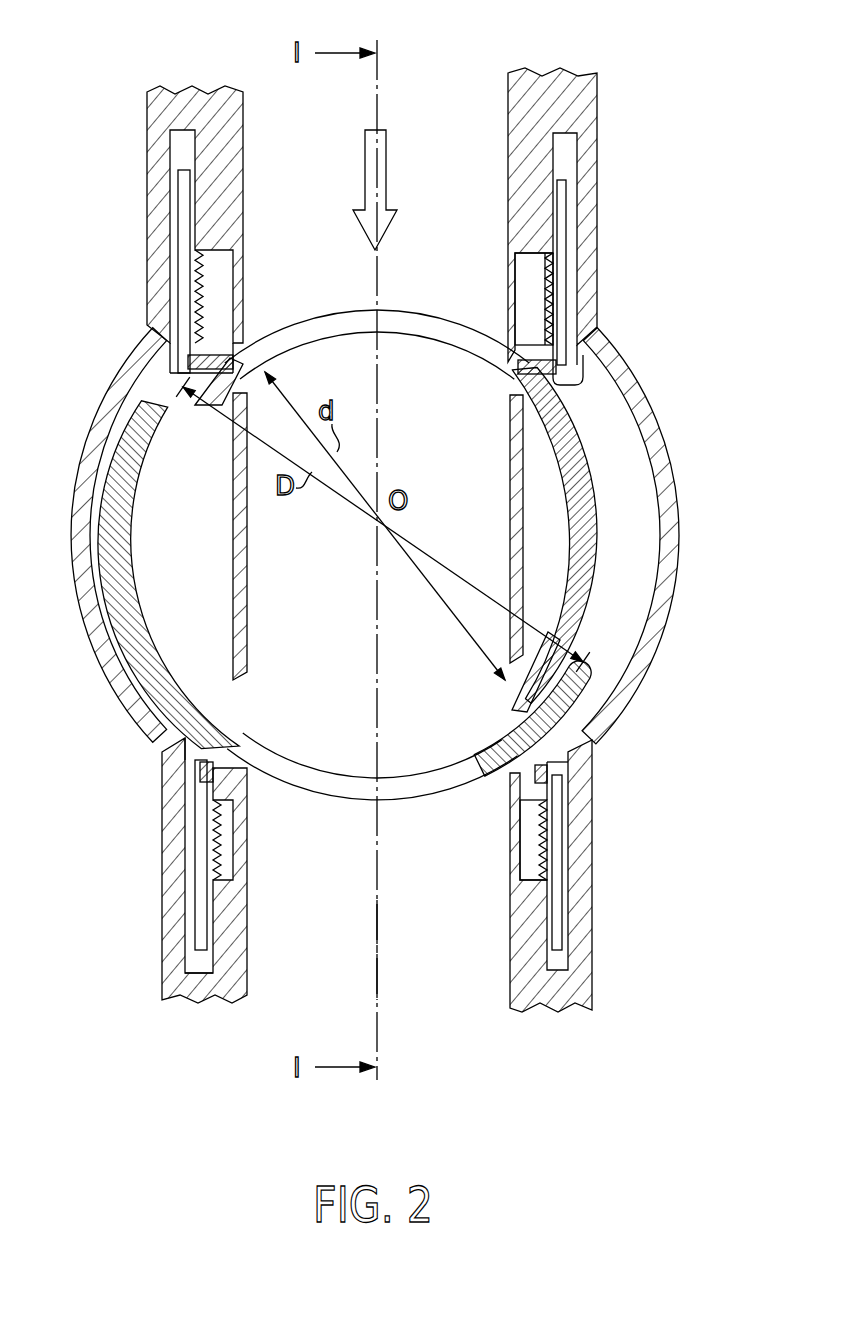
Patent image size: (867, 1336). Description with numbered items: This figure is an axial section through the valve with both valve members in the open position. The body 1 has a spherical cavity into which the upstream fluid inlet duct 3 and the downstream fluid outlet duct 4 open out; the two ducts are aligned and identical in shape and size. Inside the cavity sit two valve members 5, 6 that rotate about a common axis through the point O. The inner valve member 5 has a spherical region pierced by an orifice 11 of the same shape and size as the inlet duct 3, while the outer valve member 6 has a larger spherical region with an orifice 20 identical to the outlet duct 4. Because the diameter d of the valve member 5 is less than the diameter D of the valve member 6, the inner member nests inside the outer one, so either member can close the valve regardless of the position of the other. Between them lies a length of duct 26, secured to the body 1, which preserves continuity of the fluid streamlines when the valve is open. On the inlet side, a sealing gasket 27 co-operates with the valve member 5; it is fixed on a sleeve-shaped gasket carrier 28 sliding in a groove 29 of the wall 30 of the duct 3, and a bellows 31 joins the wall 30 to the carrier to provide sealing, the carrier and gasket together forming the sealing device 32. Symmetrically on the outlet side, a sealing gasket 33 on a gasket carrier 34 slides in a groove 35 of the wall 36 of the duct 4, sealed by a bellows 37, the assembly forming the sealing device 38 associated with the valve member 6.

The body 1 is at (640, 410).
The upstream fluid inlet duct 3 is at (450, 148).
The downstream fluid outlet duct 4 is at (438, 976).
The valve member 5 is at (612, 513).
The valve member 6 is at (110, 609).
The orifice 11 is at (432, 332).
The orifice 20 is at (430, 795).
The length of duct 26 is at (250, 622).
The sealing gasket 27 is at (545, 365).
The gasket carrier 28 is at (563, 265).
The groove 29 is at (565, 158).
The wall 30 is at (583, 100).
The bellows 31 is at (527, 305).
The sealing device 32 is at (580, 305).
The sealing gasket 33 is at (200, 770).
The gasket carrier 34 is at (198, 838).
The groove 35 is at (197, 958).
The wall 36 is at (190, 990).
The bellows 37 is at (225, 832).
The sealing device 38 is at (184, 811).